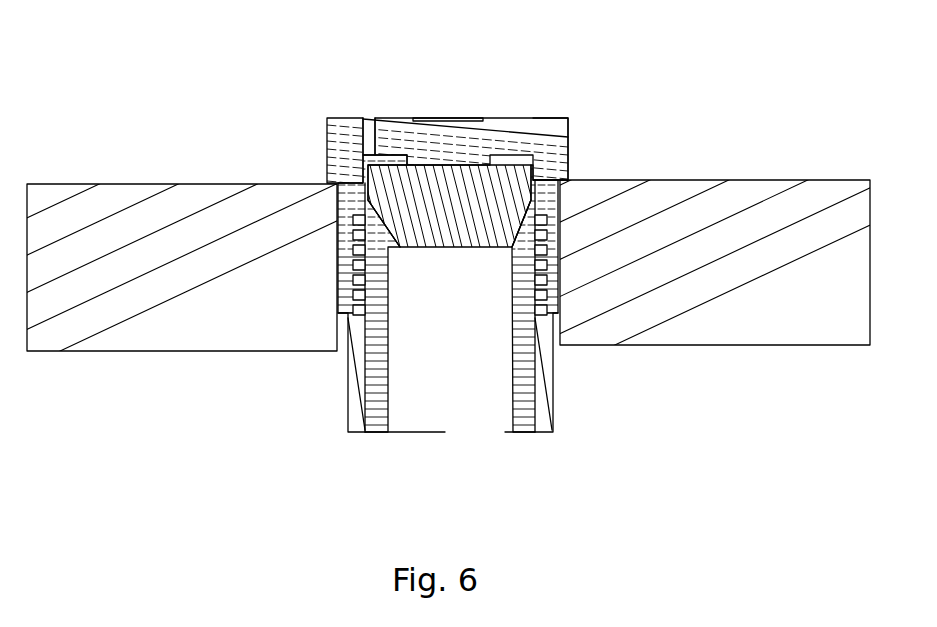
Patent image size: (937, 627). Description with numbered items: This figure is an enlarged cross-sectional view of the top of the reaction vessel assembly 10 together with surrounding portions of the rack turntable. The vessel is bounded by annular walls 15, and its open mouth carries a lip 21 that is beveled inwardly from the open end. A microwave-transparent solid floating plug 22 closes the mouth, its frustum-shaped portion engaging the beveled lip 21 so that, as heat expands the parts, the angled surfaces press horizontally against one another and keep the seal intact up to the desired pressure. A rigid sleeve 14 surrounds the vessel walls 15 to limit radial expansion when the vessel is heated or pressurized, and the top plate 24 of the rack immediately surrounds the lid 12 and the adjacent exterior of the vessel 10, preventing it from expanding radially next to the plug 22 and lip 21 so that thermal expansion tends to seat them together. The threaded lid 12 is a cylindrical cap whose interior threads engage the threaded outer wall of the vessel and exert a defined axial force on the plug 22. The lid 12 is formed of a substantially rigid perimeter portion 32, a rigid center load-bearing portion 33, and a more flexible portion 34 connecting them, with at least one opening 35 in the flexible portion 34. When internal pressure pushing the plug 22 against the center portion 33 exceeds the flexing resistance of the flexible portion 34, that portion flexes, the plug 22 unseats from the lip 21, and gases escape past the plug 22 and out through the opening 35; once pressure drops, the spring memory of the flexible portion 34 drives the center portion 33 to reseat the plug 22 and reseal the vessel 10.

The vessel assembly 10 is at (421, 268).
The threaded lid 12 is at (472, 116).
The rigid sleeve 14 is at (550, 403).
The annular walls 15 is at (525, 425).
The beveled lip 21 is at (373, 233).
The floating plug 22 is at (452, 271).
The top plate 24 is at (747, 332).
The rigid perimeter portion 32 is at (336, 118).
The center load-bearing portion 33 is at (457, 128).
The flexible portion 34 is at (513, 135).
The opening 35 is at (368, 130).